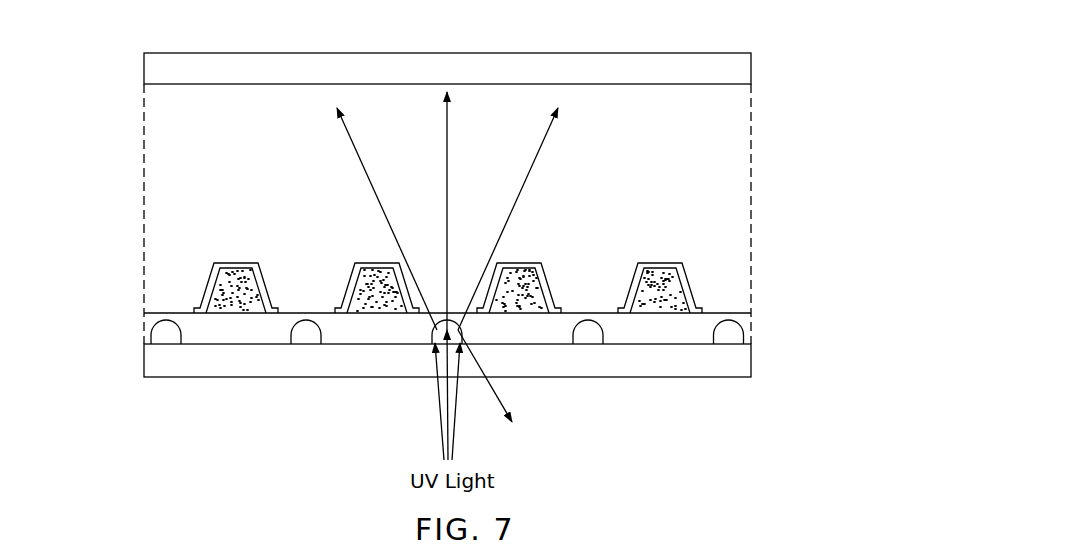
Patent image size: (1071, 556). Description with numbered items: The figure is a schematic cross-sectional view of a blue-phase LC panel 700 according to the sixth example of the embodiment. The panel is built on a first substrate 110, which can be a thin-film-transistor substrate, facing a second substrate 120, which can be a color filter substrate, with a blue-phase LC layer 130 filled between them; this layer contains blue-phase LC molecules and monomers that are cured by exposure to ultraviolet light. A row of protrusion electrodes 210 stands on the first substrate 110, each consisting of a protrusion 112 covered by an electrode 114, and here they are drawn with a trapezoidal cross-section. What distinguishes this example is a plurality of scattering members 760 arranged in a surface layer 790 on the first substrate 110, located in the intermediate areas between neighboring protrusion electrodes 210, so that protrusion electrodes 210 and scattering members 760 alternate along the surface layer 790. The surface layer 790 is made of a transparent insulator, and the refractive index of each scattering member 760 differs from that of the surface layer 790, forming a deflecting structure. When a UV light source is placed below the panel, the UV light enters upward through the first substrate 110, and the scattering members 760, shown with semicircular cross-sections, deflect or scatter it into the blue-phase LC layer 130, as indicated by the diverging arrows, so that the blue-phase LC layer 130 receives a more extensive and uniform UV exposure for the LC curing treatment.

The blue-phase LC panel 700 is at (750, 21).
The first substrate 110 is at (745, 366).
The second substrate 120 is at (744, 71).
The blue-phase LC layer 130 is at (744, 205).
The protrusion electrode 210 is at (98, 238).
The protrusion 112 is at (222, 305).
The electrode 114 is at (217, 268).
The scattering member 760 is at (588, 330).
The surface layer 790 is at (745, 320).